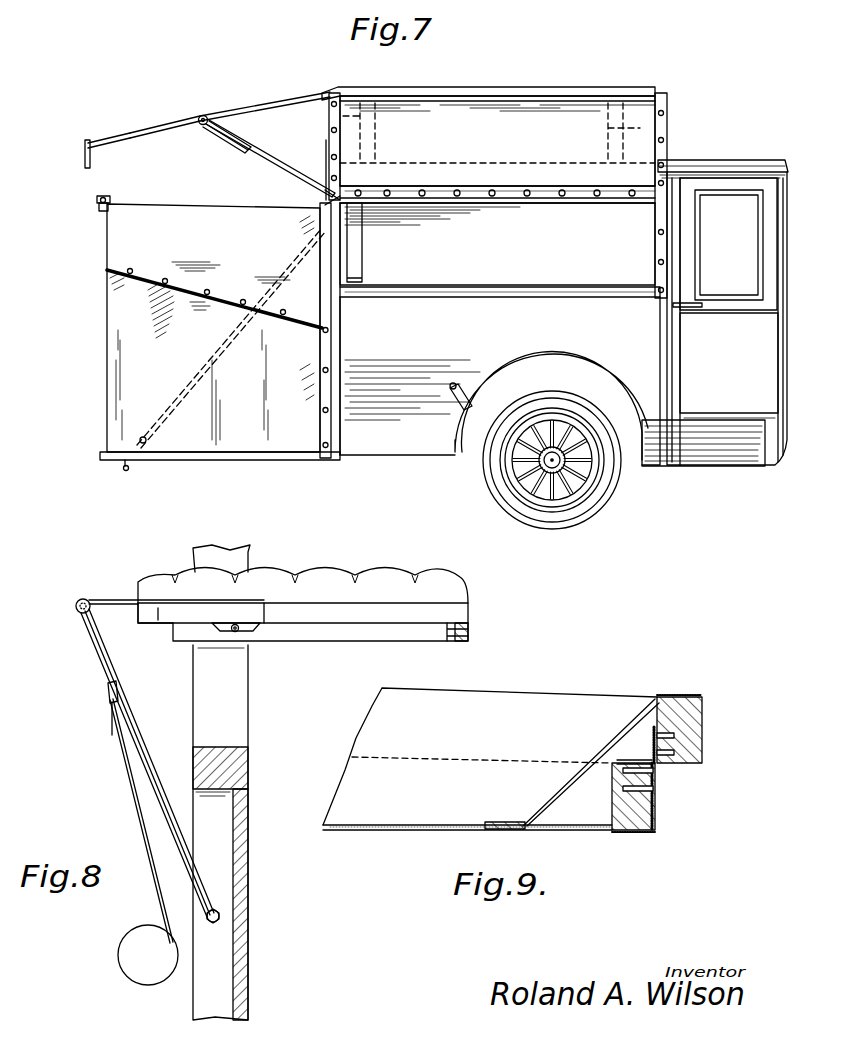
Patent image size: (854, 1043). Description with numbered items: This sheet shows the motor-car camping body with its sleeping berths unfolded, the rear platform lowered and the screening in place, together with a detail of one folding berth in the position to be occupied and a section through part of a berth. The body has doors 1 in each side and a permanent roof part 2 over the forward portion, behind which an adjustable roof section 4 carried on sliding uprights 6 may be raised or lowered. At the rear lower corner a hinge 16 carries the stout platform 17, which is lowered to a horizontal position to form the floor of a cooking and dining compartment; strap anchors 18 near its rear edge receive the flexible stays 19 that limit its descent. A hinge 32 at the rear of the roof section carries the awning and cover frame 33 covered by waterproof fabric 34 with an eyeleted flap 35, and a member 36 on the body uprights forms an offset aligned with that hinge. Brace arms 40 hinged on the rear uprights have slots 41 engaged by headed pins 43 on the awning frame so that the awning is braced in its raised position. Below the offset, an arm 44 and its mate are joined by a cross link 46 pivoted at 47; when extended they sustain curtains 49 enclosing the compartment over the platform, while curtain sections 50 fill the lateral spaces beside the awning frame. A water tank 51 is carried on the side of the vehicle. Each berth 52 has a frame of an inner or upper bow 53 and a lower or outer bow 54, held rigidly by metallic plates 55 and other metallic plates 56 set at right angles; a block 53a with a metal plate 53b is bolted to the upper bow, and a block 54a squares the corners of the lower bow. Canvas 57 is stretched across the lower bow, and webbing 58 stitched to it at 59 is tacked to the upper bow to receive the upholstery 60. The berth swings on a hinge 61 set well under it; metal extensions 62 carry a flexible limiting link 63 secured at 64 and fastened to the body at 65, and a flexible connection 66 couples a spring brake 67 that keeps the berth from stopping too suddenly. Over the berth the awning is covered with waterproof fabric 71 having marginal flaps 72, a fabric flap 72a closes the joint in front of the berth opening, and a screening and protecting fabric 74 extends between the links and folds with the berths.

In FIG. 7, the doors 1 is at (729, 365).
In FIG. 7, the permanent roof part 2 is at (712, 160).
In FIG. 7, the adjustable roof section 4 is at (500, 80).
In FIG. 7, the uprights 6 is at (378, 140).
In FIG. 7, the hinge 16 is at (336, 460).
In FIG. 7, the platform 17 is at (232, 458).
In FIG. 7, the strap anchors 18 is at (124, 466).
In FIG. 7, the flexible stay 19 is at (180, 400).
In FIG. 7, the hinge 32 is at (328, 93).
In FIG. 7, the awning and cover frame 33 is at (108, 140).
In FIG. 7, the waterproof fabric 34 is at (156, 130).
In FIG. 7, the flap 35 is at (84, 160).
In FIG. 7, the member 36 is at (349, 240).
In FIG. 7, the brace arms 40 is at (270, 162).
In FIG. 7, the slots 41 is at (222, 133).
In FIG. 7, the headed pins 43 is at (203, 115).
In FIG. 7, the arm 44 is at (100, 210).
In FIG. 7, the cross link 46 is at (108, 196).
In FIG. 7, the pivot 47 is at (97, 200).
In FIG. 7, the curtains 49 is at (105, 358).
In FIG. 7, the curtain sections 50 is at (213, 265).
In FIG. 7, the water tank 51 is at (700, 455).
In FIG. 7, the berth 52 is at (452, 290).
In FIG. 8, the berth 52 is at (460, 632).
In FIG. 8, the inner or upper bow 53 is at (470, 620).
In FIG. 9, the inner or upper bow 53 is at (708, 718).
In FIG. 8, the block 53a is at (158, 614).
In FIG. 8, the metal plate 53b is at (134, 614).
In FIG. 8, the lower or outer bow 54 is at (362, 640).
In FIG. 9, the lower or outer bow 54 is at (658, 815).
In FIG. 8, the block 54a is at (470, 644).
In FIG. 9, the metallic plates 55 is at (658, 792).
In FIG. 9, the metallic plates 56 is at (634, 762).
In FIG. 9, the canvas 57 is at (405, 822).
In FIG. 9, the webbing 58 is at (610, 760).
In FIG. 9, the stitching 59 is at (518, 822).
In FIG. 8, the upholstery 60 is at (415, 578).
In FIG. 8, the hinge 61 is at (235, 636).
In FIG. 8, the metal extensions 62 is at (116, 600).
In FIG. 8, the flexible limiting link 63 is at (115, 680).
In FIG. 8, the connection point 64 is at (75, 606).
In FIG. 8, the fastening point 65 is at (222, 915).
In FIG. 8, the flexible connection 66 is at (136, 798).
In FIG. 8, the spring brake 67 is at (132, 943).
In FIG. 7, the waterproof fabric 71 is at (497, 141).
In FIG. 7, the marginal flaps 72 is at (331, 148).
In FIG. 7, the fabric flap 72a is at (661, 300).
In FIG. 7, the screening and protecting fabric 74 is at (497, 244).